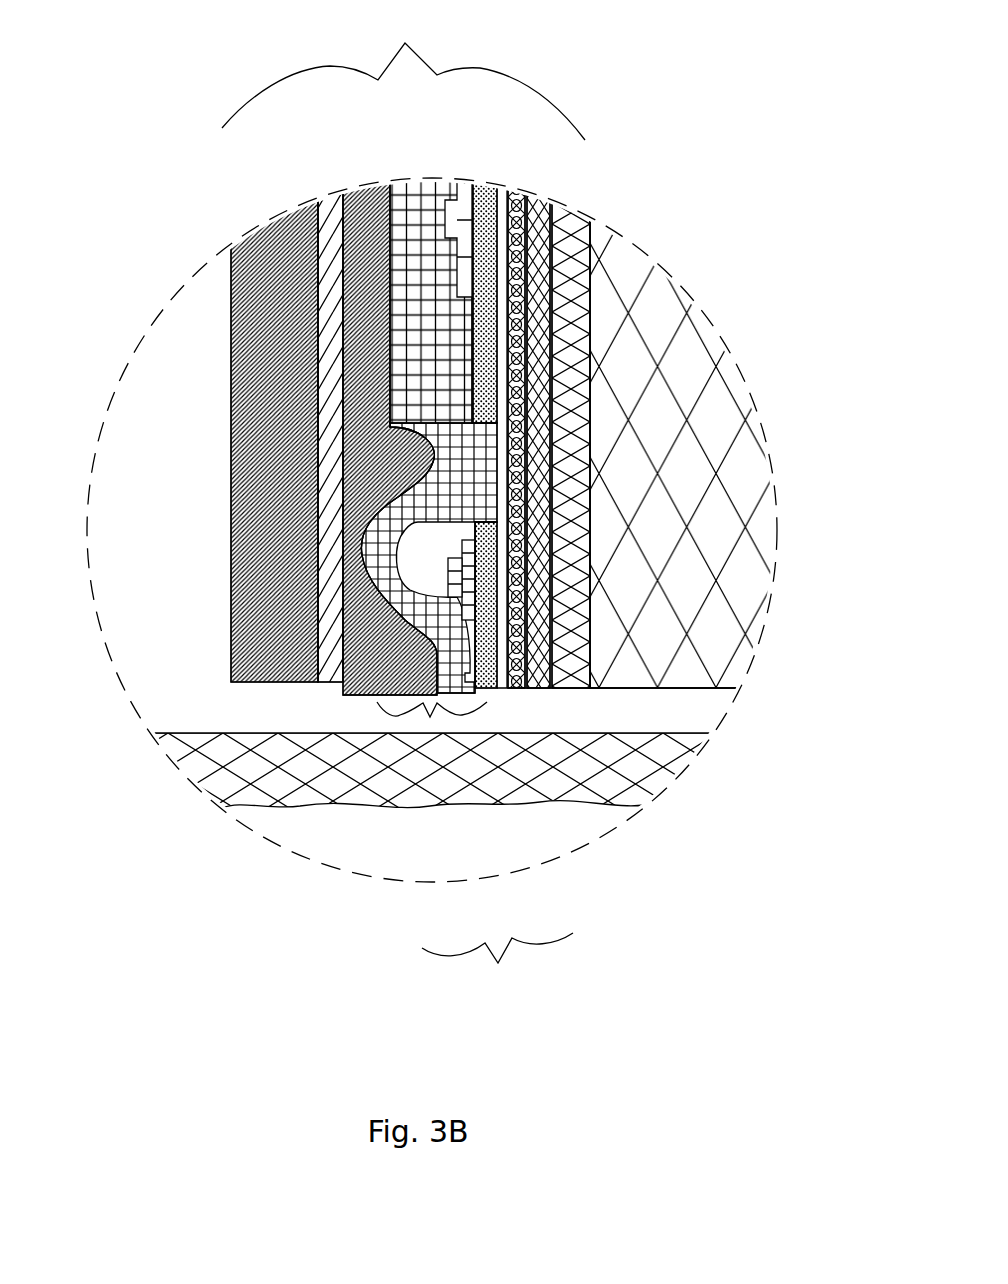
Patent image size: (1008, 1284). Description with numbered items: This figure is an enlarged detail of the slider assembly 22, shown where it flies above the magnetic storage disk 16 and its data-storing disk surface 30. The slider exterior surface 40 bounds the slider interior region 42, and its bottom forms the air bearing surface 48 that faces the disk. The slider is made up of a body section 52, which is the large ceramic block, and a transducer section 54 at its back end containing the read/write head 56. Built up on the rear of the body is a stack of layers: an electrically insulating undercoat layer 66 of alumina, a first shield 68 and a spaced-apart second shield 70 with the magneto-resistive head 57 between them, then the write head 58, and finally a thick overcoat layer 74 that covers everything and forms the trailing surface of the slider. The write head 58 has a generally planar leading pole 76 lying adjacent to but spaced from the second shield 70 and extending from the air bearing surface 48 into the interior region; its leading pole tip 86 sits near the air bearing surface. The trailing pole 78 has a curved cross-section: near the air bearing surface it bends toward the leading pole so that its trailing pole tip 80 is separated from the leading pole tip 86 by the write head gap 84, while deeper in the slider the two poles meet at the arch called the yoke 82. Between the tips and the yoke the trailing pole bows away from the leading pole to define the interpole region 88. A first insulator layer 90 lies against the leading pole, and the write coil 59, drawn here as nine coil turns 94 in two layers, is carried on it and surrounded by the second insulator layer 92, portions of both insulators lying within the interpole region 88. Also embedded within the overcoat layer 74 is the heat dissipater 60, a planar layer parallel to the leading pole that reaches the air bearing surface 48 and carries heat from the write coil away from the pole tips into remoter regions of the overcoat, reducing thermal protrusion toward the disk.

The magnetic storage disk 16 is at (603, 783).
The slider assembly 22 is at (178, 86).
The disk surface 30 is at (192, 731).
The slider exterior surface 40 is at (226, 320).
The slider interior region 42 is at (688, 463).
The air bearing surface 48 is at (702, 696).
The body section 52 is at (688, 385).
The transducer section 54 is at (403, 77).
The read/write head 56 is at (497, 971).
The magneto-resistive head 57 is at (527, 708).
The write head 58 is at (430, 718).
The write coil 59 is at (470, 198).
The heat dissipater 60 is at (322, 323).
The undercoat layer 66 is at (565, 222).
The first shield 68 is at (530, 277).
The second shield 70 is at (503, 333).
The overcoat layer 74 is at (353, 605).
The leading pole 76 is at (515, 585).
The trailing pole 78 is at (600, 686).
The trailing pole tip 80 is at (580, 690).
The yoke 82 is at (480, 485).
The write head gap 84 is at (532, 690).
The leading pole tip 86 is at (555, 690).
The interpole region 88 is at (430, 540).
The first insulator layer 90 is at (480, 405).
The second insulator layer 92 is at (430, 393).
The coil turns 94 is at (462, 238).